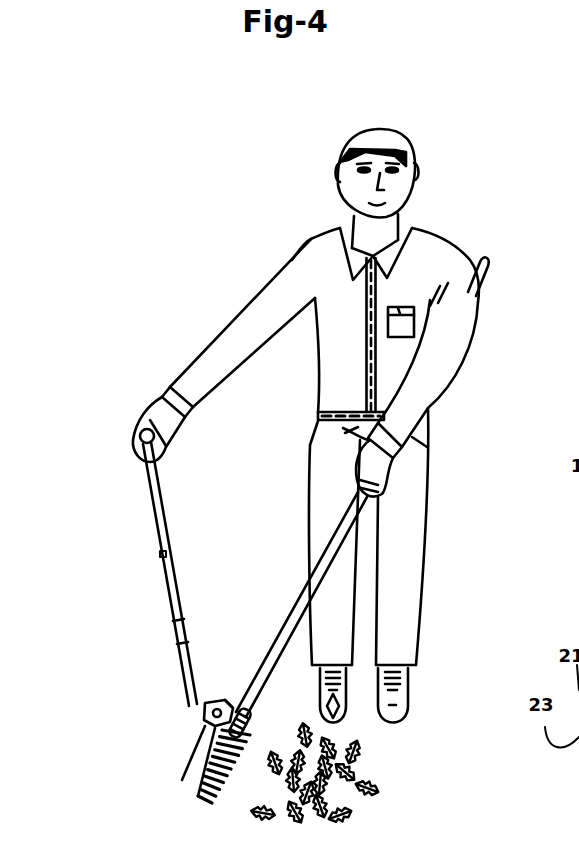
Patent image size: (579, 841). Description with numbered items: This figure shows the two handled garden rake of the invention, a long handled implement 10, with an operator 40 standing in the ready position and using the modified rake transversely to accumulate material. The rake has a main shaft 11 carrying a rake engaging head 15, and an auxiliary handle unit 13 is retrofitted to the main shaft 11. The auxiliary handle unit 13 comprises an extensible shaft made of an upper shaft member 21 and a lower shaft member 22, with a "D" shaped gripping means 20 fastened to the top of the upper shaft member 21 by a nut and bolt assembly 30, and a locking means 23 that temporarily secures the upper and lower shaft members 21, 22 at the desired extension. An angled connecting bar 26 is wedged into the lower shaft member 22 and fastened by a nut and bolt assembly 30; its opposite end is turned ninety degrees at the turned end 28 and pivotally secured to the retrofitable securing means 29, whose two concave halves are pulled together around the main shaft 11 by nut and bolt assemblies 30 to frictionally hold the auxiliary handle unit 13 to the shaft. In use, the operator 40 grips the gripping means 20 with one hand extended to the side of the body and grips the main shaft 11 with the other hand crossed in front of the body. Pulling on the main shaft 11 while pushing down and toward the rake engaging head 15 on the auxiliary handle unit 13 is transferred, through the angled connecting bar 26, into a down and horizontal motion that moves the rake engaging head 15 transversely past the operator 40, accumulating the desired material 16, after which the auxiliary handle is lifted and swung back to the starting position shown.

The operator 40 is at (442, 207).
The long handled implement 10 is at (281, 597).
The main shaft 11 is at (329, 543).
The auxiliary handle unit 13 is at (124, 567).
The gripping means 20 is at (145, 443).
The upper shaft member 21 is at (167, 532).
The lower shaft member 22 is at (180, 645).
The locking means 23 is at (129, 553).
The angled connecting bar 26 is at (206, 713).
The turned end 28 is at (217, 703).
The retrofitable securing means 29 is at (204, 724).
The rake engaging head 15 is at (198, 792).
The nut and bolt assembly 30 is at (158, 456).
The desired material 16 is at (343, 802).